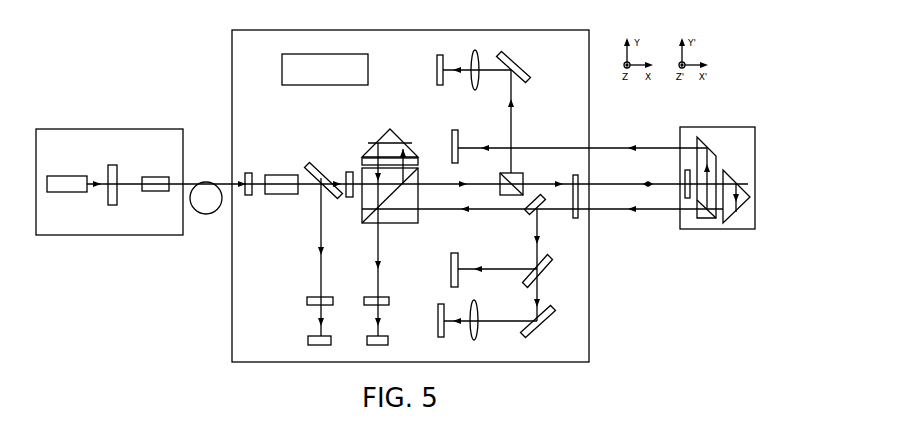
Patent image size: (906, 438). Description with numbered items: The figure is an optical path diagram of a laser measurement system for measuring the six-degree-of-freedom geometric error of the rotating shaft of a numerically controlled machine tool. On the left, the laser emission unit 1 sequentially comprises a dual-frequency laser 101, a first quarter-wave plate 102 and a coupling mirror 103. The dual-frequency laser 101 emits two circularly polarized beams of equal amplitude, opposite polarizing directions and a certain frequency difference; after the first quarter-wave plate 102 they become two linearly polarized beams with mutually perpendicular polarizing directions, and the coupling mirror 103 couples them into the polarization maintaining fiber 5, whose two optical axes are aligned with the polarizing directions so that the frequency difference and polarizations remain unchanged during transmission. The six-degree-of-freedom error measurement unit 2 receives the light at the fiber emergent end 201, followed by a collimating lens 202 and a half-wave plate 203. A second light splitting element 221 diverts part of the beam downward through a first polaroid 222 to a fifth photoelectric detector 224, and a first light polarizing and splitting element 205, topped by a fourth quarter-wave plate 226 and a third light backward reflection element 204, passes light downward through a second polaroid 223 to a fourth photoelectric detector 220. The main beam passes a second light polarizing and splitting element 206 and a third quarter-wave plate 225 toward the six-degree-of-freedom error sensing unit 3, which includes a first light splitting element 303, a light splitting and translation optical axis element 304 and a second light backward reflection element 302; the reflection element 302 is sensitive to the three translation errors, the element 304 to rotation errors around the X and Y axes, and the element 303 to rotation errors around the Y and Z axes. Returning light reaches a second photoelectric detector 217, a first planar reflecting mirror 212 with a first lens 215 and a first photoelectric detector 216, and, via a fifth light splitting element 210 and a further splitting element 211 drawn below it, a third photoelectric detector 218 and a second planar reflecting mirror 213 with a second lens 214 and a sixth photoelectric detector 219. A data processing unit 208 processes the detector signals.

The laser emission unit 1 is at (78, 135).
The dual-frequency laser 101 is at (65, 190).
The first λ/4 wave plate 102 is at (111, 190).
The coupling mirror 103 is at (154, 191).
The polarization maintaining fiber 5 is at (206, 213).
The six-degree-of-freedom error measurement unit 2 is at (247, 103).
The fiber emergent end 201 is at (249, 196).
The collimating lens 202 is at (287, 195).
The λ/2 wave plate 203 is at (347, 170).
The third light backward reflection element 204 is at (397, 147).
The first light polarizing and splitting element 205 is at (393, 218).
The second light polarizing and splitting element 206 is at (520, 175).
The data processing unit 208 is at (300, 80).
The fifth light splitting element 210 is at (528, 215).
The beam splitter 211 is at (551, 258).
The first planar reflecting mirror 212 is at (527, 73).
The second planar reflecting mirror 213 is at (553, 302).
The second lens 214 is at (478, 302).
The first lens 215 is at (478, 85).
The first photoelectric detector 216 is at (437, 80).
The second photoelectric detector 217 is at (458, 130).
The third photoelectric detector 218 is at (456, 263).
The sixth photoelectric detector 219 is at (440, 305).
The fourth photoelectric detector 220 is at (371, 338).
The second light splitting element 221 is at (312, 165).
The first polaroid 222 is at (313, 297).
The second polaroid 223 is at (372, 297).
The fifth photoelectric detector 224 is at (312, 338).
The third λ/4 wave plate 225 is at (575, 220).
The fourth λ/4 wave plate 226 is at (415, 160).
The six-degree-of-freedom error sensing unit 3 is at (731, 135).
The second light backward reflection element 302 is at (731, 220).
The first light splitting element 303 is at (685, 180).
The light splitting and translation optical axis element 304 is at (700, 140).